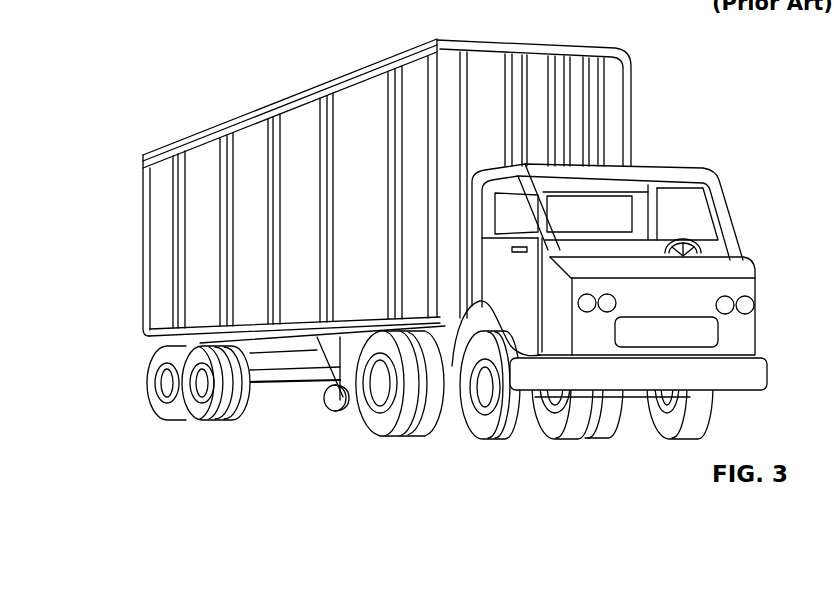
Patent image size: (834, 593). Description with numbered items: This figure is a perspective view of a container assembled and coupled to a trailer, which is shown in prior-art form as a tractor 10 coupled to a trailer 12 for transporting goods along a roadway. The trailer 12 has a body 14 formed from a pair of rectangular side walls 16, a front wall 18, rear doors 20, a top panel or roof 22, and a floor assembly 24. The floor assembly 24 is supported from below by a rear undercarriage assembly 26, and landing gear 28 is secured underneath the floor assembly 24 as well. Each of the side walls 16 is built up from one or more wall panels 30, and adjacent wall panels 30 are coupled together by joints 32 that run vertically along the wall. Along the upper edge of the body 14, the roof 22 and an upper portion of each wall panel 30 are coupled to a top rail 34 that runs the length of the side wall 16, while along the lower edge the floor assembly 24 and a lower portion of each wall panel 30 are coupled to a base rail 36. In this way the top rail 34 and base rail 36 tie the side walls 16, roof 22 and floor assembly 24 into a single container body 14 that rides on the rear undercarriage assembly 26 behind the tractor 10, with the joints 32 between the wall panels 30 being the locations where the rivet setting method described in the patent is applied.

The tractor 10 is at (755, 290).
The trailer 12 is at (163, 52).
The body 14 is at (168, 273).
The side walls 16 is at (212, 167).
The front wall 18 is at (537, 67).
The rear doors 20 is at (143, 188).
The top panel or roof 22 is at (467, 42).
The floor assembly 24 is at (147, 348).
The rear undercarriage assembly 26 is at (205, 417).
The landing gear 28 is at (338, 413).
The wall panels 30 is at (252, 157).
The joints 32 is at (277, 128).
The top rail 34 is at (367, 63).
The base rail 36 is at (290, 340).